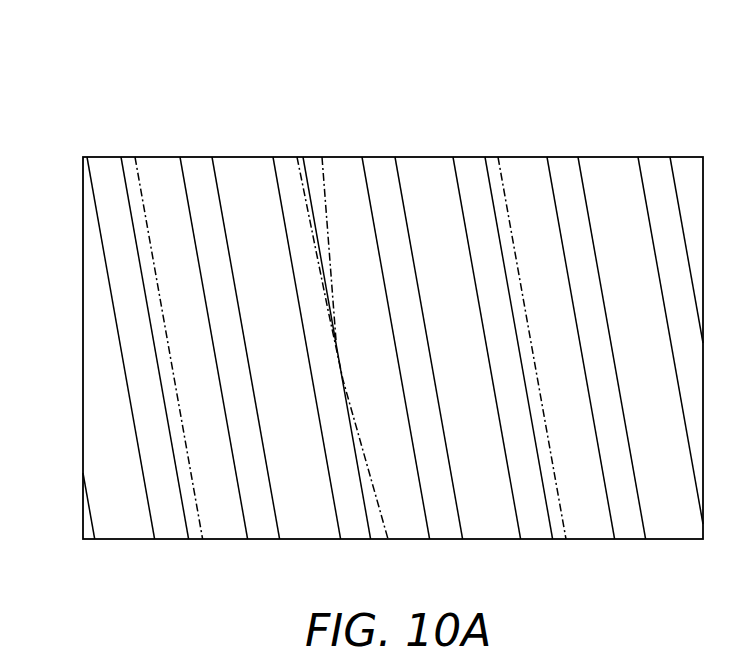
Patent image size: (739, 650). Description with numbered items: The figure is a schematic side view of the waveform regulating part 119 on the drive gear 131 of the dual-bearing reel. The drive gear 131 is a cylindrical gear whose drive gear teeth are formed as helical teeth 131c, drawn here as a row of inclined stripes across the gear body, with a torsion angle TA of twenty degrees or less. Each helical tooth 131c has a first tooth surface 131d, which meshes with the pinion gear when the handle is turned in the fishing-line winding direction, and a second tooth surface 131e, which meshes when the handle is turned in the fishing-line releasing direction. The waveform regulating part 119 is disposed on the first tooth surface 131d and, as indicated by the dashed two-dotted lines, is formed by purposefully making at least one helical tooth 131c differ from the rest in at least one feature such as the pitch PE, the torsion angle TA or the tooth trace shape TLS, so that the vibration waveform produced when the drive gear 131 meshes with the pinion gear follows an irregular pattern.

The drive gear 131 is at (366, 313).
The helical teeth 131c is at (153, 170).
The first tooth surface 131d is at (122, 240).
The second tooth surface 131e is at (207, 223).
The waveform regulating part 119 is at (196, 502).
The pitch PE is at (145, 208).
The tooth trace shape TLS is at (297, 157).
The torsion angle TA is at (498, 157).